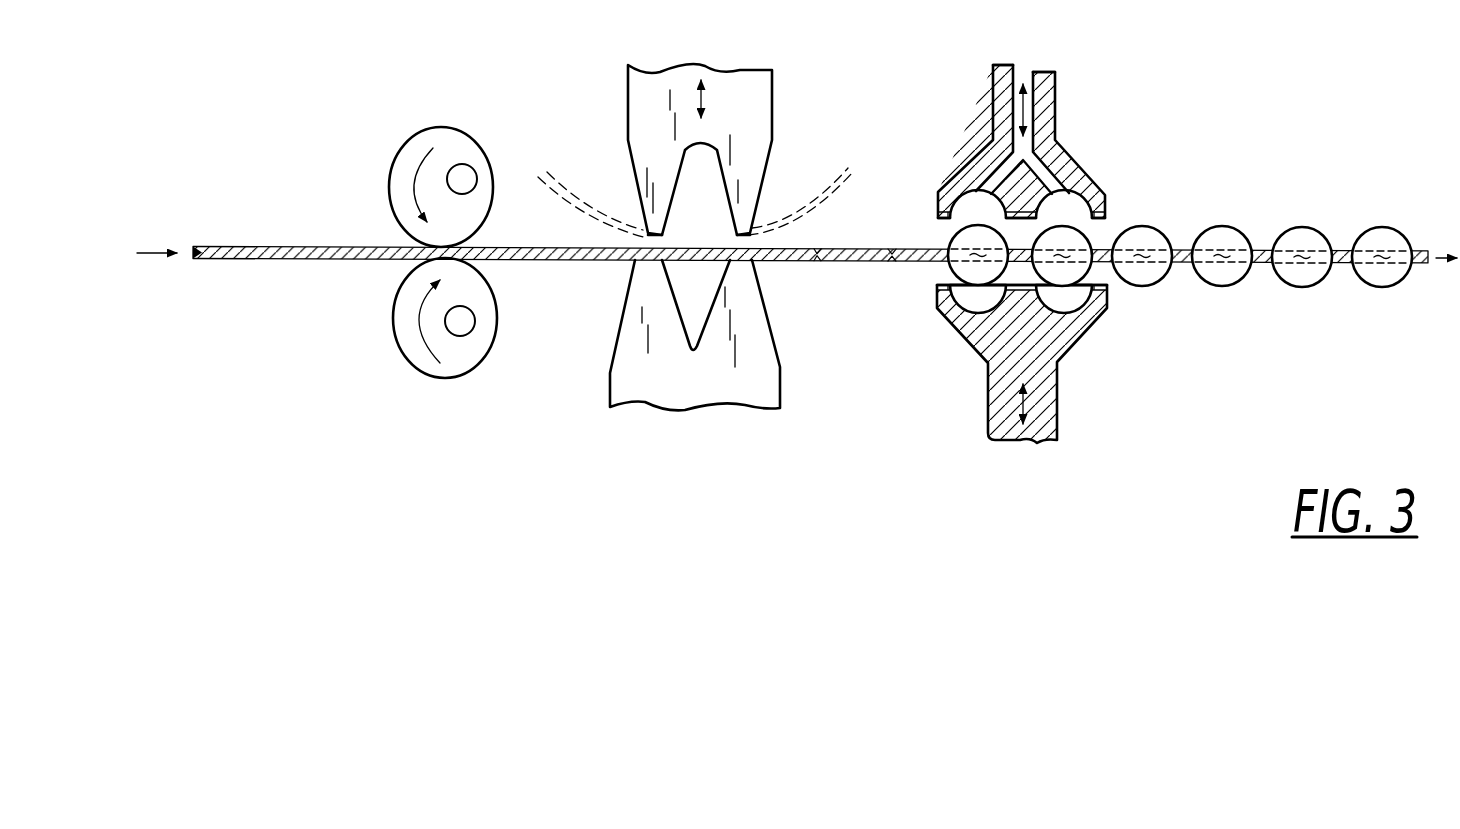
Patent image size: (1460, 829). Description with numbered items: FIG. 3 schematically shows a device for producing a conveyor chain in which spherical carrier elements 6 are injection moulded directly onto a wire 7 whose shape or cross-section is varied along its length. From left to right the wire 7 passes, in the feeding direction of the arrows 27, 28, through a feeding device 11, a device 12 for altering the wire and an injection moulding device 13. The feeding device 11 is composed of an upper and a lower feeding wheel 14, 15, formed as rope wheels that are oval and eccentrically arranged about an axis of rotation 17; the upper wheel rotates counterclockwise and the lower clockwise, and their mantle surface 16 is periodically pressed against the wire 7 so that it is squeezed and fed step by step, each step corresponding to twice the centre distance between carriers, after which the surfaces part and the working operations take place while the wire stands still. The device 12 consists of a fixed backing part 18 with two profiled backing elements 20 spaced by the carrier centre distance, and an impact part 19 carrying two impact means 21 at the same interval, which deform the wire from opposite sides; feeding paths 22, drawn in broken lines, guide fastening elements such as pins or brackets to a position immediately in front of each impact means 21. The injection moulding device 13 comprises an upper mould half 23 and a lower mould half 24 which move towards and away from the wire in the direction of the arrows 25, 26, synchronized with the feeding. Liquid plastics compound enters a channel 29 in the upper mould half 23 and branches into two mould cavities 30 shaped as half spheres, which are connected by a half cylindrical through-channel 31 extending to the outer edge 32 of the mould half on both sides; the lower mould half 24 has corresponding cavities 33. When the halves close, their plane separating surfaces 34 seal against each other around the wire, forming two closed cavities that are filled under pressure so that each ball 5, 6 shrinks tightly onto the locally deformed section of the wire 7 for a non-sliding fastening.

The ball 5 is at (1305, 225).
The carrier elements 6 is at (1222, 228).
The wire 7 is at (240, 246).
The feeding device 11 is at (436, 124).
The device for altering the wire 12 is at (730, 60).
The injection moulding device 13 is at (1024, 62).
The upper feeding wheel 14 is at (400, 163).
The lower feeding wheel 15 is at (395, 308).
The mantle surface 16 is at (387, 197).
The axis of rotation 17 is at (467, 172).
The backing part 18 is at (763, 367).
The impact part 19 is at (762, 80).
The backing elements 20 is at (642, 251).
The impact means 21 is at (737, 238).
The feeding paths 22 is at (813, 203).
The upper mould half 23 is at (1070, 168).
The lower mould half 24 is at (1066, 343).
The arrow 25 is at (1025, 109).
The arrow 26 is at (1027, 400).
The arrow 27 is at (152, 251).
The arrow 28 is at (1440, 256).
The channel 29 is at (1023, 72).
The mould cavities 30 is at (962, 207).
The half cylindrical through-channel 31 is at (1103, 228).
The outer edge 32 is at (937, 215).
The cavities 33 is at (1098, 303).
The plane separating surfaces 34 is at (1110, 284).